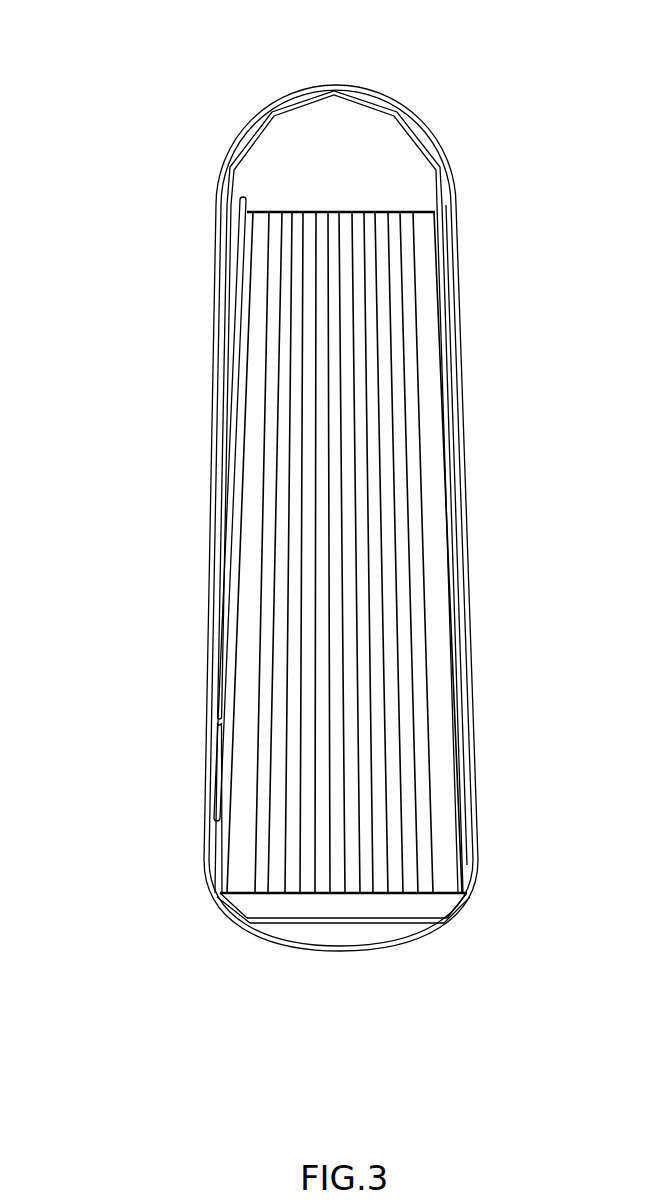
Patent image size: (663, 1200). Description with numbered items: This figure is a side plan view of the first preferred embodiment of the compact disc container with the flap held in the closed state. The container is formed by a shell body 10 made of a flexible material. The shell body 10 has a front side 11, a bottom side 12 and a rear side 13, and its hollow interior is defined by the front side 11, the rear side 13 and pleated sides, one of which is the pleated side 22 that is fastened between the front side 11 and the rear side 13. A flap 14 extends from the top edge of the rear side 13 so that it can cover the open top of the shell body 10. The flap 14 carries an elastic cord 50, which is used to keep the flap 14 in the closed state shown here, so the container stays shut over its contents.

The shell body 10 is at (156, 458).
The front side 11 is at (222, 754).
The bottom side 12 is at (372, 927).
The rear side 13 is at (456, 473).
The flap 14 is at (212, 632).
The pleated side 22 is at (348, 212).
The elastic cord 50 is at (393, 93).